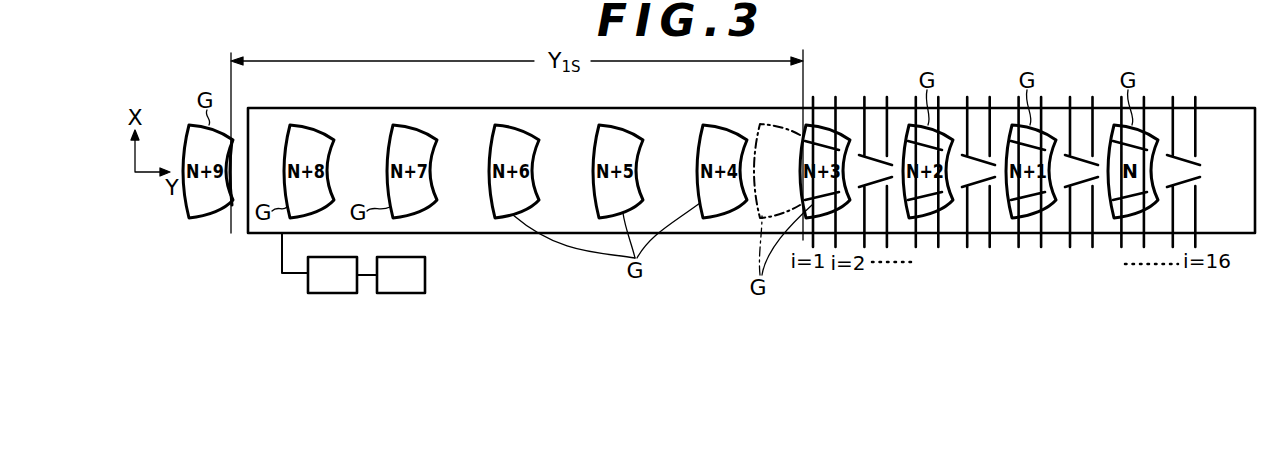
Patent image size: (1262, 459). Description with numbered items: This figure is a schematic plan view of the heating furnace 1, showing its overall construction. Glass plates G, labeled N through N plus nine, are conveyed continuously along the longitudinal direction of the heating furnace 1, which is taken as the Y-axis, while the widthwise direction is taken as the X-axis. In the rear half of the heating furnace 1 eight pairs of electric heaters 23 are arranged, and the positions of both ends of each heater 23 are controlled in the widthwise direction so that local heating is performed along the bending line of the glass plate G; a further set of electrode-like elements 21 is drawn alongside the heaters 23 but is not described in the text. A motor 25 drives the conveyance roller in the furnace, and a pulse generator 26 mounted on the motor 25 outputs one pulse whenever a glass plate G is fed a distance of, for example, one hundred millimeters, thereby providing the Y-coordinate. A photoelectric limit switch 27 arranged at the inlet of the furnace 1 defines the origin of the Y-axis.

The heating furnace 1 is at (510, 233).
The electrode 21 is at (874, 120).
The electric heater 23 is at (812, 137).
The motor 25 is at (307, 287).
The pulse generator 26 is at (425, 285).
The photoelectric limit switch 27 is at (236, 174).